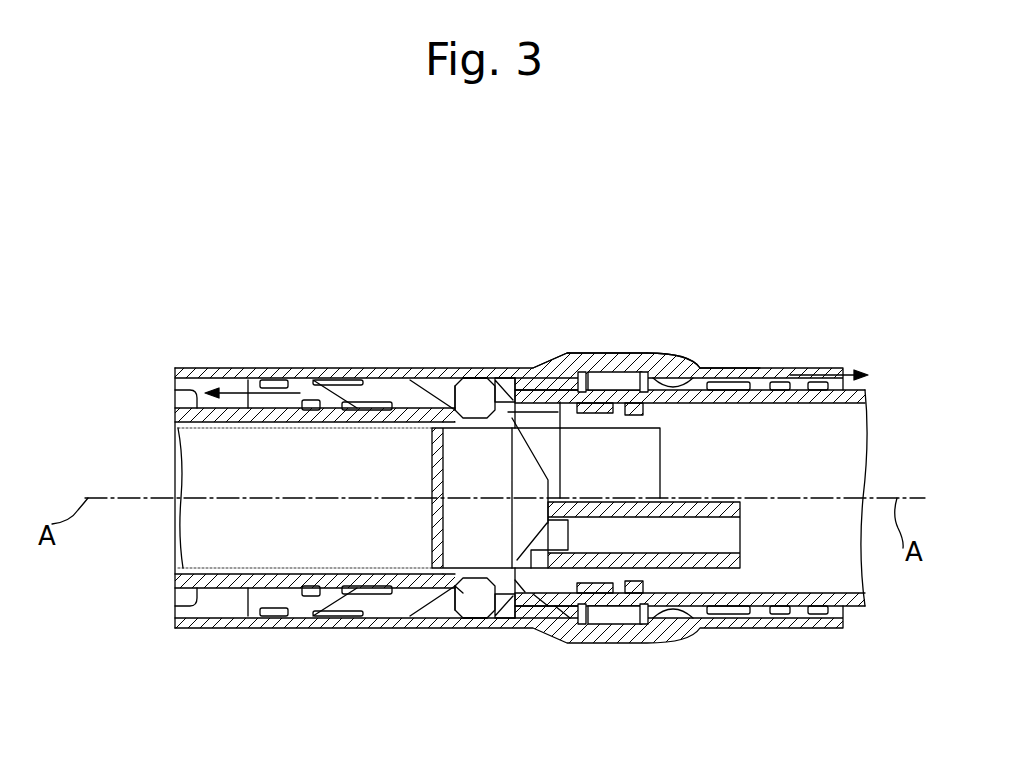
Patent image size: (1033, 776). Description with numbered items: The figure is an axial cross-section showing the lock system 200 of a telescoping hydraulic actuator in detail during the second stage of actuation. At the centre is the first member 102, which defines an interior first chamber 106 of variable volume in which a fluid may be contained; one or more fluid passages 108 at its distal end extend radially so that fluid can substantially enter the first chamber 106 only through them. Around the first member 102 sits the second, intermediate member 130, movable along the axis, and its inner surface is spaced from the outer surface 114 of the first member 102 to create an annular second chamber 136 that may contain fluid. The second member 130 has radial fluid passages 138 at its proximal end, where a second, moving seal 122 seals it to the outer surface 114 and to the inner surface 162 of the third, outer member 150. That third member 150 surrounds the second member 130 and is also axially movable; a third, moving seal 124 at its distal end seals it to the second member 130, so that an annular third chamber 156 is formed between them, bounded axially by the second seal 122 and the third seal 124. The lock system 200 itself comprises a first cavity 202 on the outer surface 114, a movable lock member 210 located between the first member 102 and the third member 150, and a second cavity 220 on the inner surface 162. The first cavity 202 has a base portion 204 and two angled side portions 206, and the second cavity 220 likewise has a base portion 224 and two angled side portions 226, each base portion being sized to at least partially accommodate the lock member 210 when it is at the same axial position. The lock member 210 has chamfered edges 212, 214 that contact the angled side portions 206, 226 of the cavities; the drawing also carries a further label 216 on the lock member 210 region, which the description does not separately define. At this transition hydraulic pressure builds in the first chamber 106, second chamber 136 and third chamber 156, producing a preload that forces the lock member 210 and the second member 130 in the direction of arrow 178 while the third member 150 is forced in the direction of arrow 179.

The lock system 200 is at (492, 298).
The third member 150 is at (201, 367).
The arrow 178 is at (237, 378).
The outer surface 114 is at (198, 388).
The chamfered edge 212 is at (452, 388).
The lock member 210 is at (470, 380).
The snap ring 216 is at (485, 378).
The second seal 122 is at (512, 385).
The second cavity 220 is at (588, 371).
The base portion 224 is at (640, 372).
The inner surface 162 is at (672, 370).
The third seal 124 is at (703, 362).
The arrow 179 is at (848, 370).
The second member 130 is at (810, 400).
The angled side portions 226 is at (646, 385).
The chamfered edge 214 is at (452, 410).
The first cavity 202 is at (445, 428).
The base portion 204 is at (478, 422).
The first chamber 106 is at (235, 541).
The second chamber 136 is at (740, 566).
The first member 102 is at (207, 590).
The angled side portions 206 is at (463, 592).
The fluid passages 108 is at (520, 585).
The fluid passages 138 is at (540, 600).
The third chamber 156 is at (563, 613).